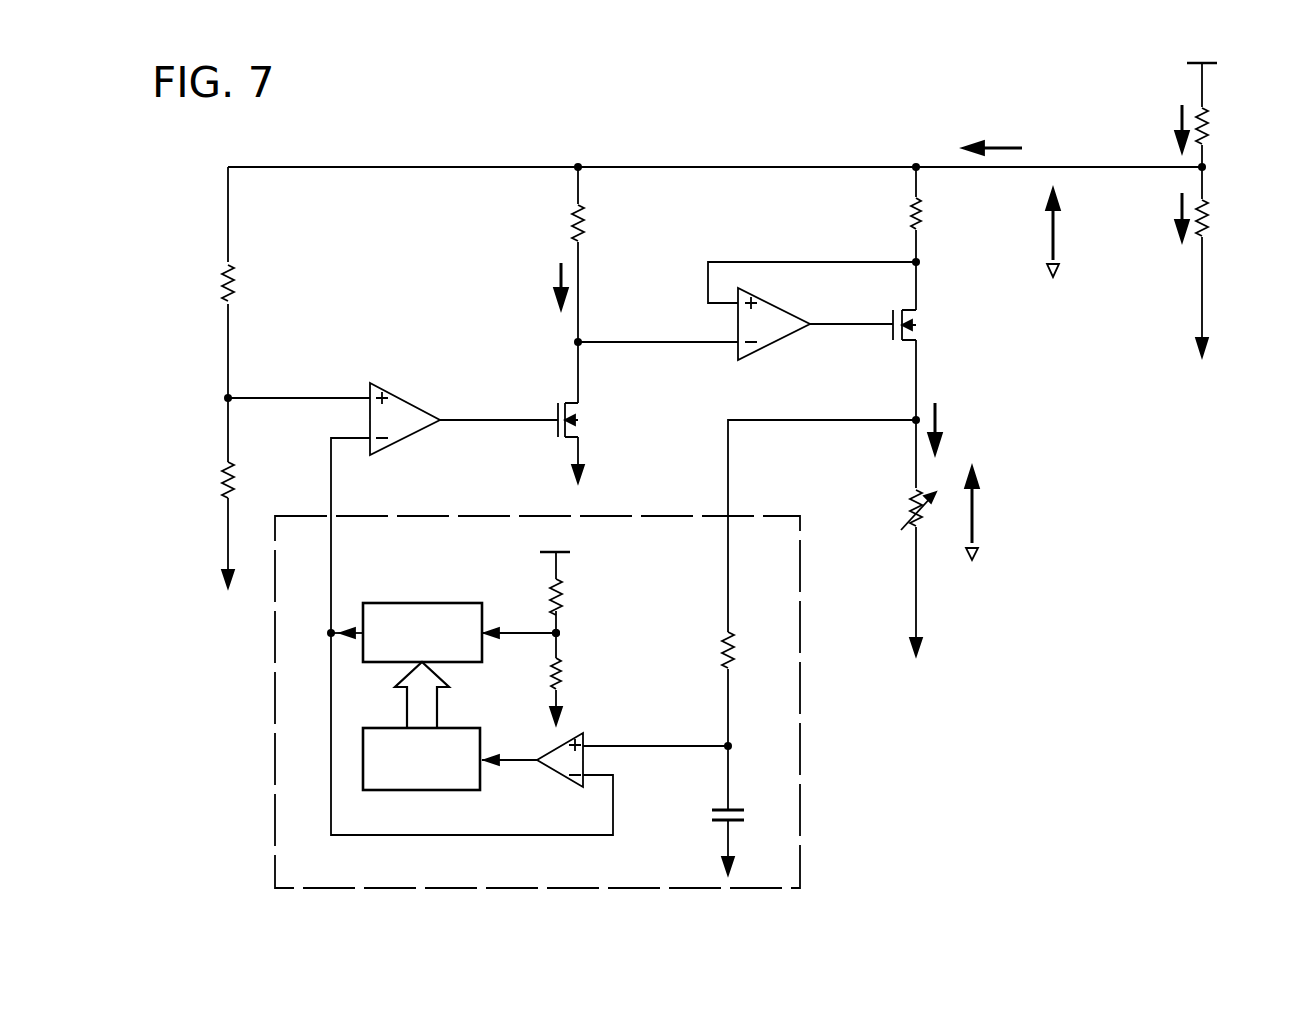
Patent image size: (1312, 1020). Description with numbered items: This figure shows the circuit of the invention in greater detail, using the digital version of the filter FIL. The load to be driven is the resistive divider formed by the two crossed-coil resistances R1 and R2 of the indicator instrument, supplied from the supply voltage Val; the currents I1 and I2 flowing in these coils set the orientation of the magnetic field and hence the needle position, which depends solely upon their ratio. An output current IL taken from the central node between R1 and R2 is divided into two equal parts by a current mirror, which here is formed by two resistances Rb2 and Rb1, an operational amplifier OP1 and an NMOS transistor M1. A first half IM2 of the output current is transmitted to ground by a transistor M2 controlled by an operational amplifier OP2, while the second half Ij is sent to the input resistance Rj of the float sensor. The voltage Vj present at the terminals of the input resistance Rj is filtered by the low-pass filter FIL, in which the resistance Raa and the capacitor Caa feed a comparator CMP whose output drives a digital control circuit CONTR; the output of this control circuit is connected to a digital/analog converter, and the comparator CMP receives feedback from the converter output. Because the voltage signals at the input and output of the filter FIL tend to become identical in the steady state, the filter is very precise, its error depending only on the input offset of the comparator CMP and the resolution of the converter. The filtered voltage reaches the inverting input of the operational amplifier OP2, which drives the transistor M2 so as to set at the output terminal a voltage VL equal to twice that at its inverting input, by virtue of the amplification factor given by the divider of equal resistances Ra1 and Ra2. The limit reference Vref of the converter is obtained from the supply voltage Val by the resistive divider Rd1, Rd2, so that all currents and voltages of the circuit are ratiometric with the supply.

The resistance Ra1 is at (228, 281).
The resistance Ra2 is at (228, 478).
The resistance Rb1 is at (916, 218).
The resistance Rb2 is at (578, 220).
The resistance R1 is at (1207, 126).
The resistance R2 is at (1207, 220).
The input resistance Rj is at (906, 492).
The resistance Raa is at (732, 648).
The capacitor Caa is at (732, 810).
The resistance Rd1 is at (561, 598).
The resistance Rd2 is at (562, 676).
The operational amplifier OP1 is at (793, 337).
The operational amplifier OP2 is at (403, 396).
The comparator CMP is at (557, 770).
The NMOS transistor M1 is at (920, 333).
The transistor M2 is at (578, 430).
The digital control circuit CONTR is at (462, 790).
The filter FIL is at (269, 728).
The output current IL is at (991, 148).
The voltage VL is at (1053, 222).
The current I1 is at (1179, 118).
The current I2 is at (1182, 216).
The first half of the output current IM2 is at (559, 272).
The second half of the output current Ij is at (937, 420).
The voltage Vj is at (974, 496).
The supply voltage Val is at (1211, 63).
The limit reference Vref is at (517, 631).